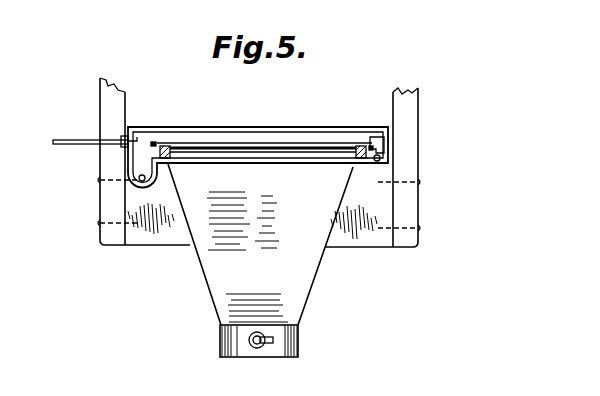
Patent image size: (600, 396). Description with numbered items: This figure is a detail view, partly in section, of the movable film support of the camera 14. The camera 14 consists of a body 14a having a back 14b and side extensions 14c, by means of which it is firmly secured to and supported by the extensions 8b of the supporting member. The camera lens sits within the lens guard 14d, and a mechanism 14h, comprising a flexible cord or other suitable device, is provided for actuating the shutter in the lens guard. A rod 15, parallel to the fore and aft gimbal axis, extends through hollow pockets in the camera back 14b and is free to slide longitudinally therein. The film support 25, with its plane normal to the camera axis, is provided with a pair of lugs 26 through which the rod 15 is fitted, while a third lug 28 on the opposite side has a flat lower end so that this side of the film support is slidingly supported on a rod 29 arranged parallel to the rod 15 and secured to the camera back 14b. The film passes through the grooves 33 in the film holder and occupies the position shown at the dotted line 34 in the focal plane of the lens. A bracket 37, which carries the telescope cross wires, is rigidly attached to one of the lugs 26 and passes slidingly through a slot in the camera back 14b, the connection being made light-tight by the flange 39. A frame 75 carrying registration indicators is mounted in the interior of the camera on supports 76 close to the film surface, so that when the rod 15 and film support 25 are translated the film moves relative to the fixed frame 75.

The extensions of the member 8b is at (103, 203).
The camera 14 is at (302, 293).
The camera body 14a is at (247, 257).
The camera back 14b is at (207, 126).
The side extensions 14c is at (130, 192).
The lens guard 14d is at (222, 345).
The shutter actuating mechanism 14h is at (253, 348).
The rod 15 is at (137, 178).
The film support 25 is at (322, 137).
The lugs 26 is at (140, 160).
The third lug 28 is at (382, 145).
The rod 29 is at (381, 158).
The grooves 33 is at (153, 143).
The dotted line indicating film position 34 is at (228, 145).
The bracket 37 is at (72, 140).
The flange 39 is at (122, 138).
The frame 75 is at (278, 145).
The supports 76 is at (168, 158).